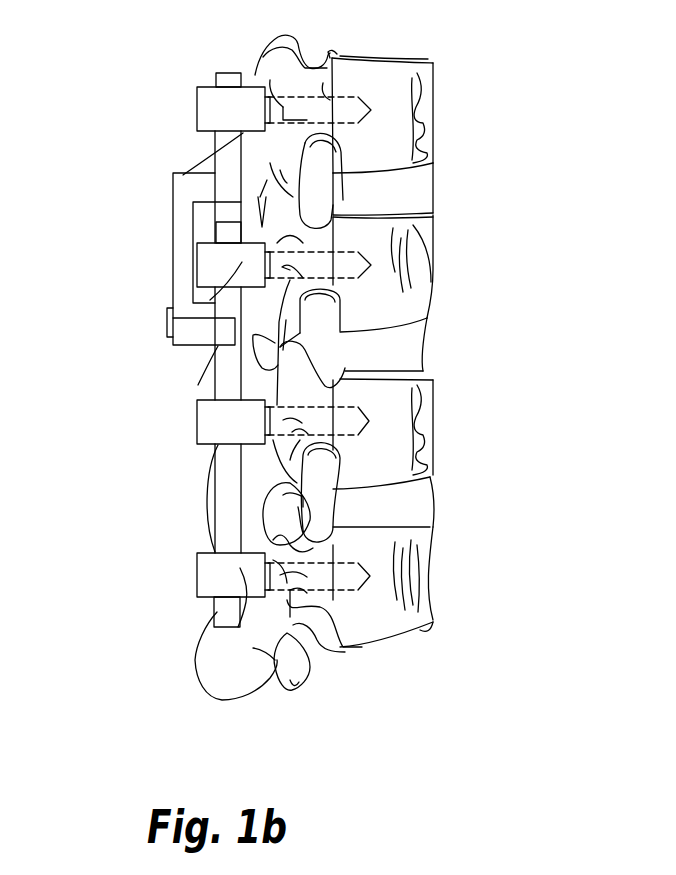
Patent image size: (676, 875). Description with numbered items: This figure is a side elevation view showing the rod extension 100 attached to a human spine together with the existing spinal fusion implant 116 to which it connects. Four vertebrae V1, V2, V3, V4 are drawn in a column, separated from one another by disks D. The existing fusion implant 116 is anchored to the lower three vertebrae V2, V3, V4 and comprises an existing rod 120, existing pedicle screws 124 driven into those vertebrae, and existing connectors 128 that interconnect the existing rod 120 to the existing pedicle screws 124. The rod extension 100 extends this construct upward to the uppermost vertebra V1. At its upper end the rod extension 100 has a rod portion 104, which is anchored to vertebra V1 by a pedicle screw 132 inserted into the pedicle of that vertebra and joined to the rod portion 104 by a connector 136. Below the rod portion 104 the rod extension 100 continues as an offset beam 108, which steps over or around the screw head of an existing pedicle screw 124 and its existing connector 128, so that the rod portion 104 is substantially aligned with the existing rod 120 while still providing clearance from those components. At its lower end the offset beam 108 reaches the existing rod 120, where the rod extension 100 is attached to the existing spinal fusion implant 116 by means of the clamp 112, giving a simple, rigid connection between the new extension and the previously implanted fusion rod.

The rod extension 100 is at (162, 150).
The rod portion 104 is at (212, 153).
The offset beam 108 is at (173, 225).
The clamp 112 is at (188, 337).
The existing fusion implant 116 is at (148, 554).
The existing rod 120 is at (220, 372).
The existing pedicle screws 124 is at (330, 252).
The existing connectors 128 is at (173, 177).
The pedicle screw 132 is at (327, 100).
The connector 136 is at (242, 103).
The vertebra V1 is at (430, 127).
The vertebra V2 is at (425, 273).
The vertebra V3 is at (430, 442).
The vertebra V4 is at (425, 580).
The disks D is at (430, 183).